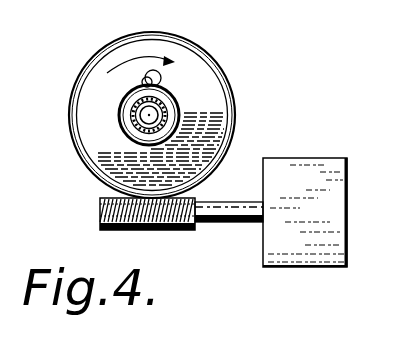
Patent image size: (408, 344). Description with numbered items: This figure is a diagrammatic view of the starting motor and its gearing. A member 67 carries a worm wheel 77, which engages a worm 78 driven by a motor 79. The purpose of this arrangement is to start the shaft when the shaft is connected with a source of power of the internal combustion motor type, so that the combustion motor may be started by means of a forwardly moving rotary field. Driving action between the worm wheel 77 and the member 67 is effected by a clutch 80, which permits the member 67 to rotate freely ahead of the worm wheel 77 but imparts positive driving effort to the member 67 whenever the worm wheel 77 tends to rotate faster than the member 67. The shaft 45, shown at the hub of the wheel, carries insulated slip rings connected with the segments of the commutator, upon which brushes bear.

The worm wheel 77 is at (182, 62).
The clutch 80 is at (141, 81).
The shaft 45 is at (128, 117).
The member 67 is at (168, 107).
The worm 78 is at (195, 200).
The motor 79 is at (292, 173).